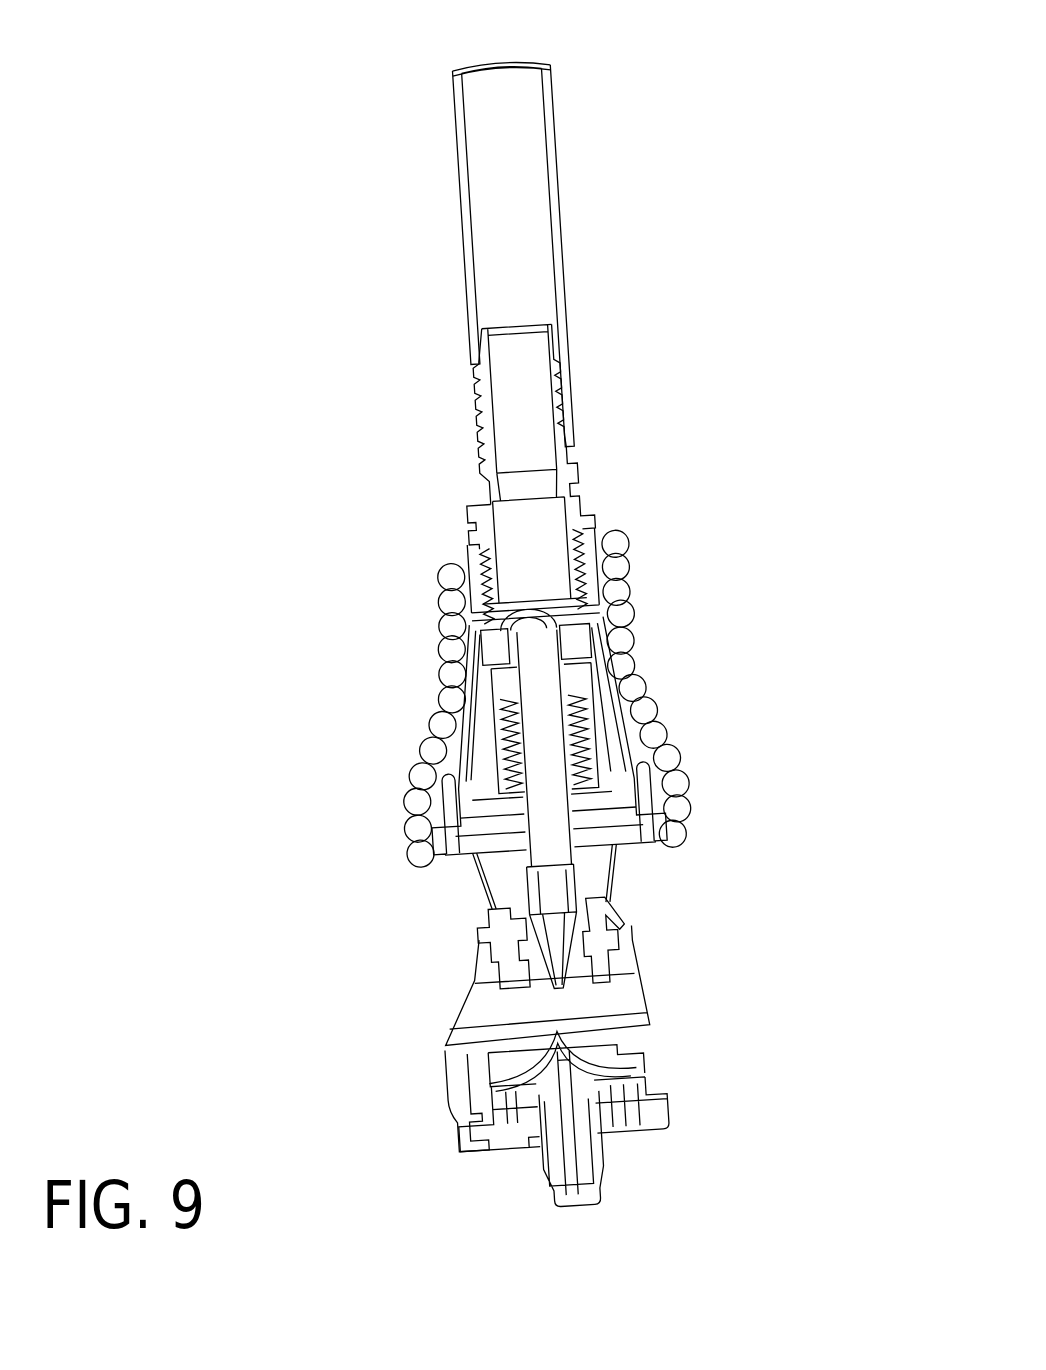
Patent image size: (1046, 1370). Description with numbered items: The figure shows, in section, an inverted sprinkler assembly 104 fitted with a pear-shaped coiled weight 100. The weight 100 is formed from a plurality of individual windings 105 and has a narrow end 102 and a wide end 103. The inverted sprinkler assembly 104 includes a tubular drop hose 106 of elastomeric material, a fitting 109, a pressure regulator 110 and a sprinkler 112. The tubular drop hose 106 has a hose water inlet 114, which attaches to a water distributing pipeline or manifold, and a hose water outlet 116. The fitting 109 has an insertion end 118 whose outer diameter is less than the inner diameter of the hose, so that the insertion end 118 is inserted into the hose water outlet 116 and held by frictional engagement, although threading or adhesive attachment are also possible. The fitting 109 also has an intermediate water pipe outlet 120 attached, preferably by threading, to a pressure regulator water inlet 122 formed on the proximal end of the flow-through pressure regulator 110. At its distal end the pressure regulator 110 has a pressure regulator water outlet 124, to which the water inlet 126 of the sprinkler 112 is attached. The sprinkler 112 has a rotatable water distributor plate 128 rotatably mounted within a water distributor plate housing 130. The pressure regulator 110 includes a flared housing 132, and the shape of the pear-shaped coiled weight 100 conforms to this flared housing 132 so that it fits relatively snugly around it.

The pear-shaped coiled weight 100 is at (647, 719).
The narrow end 102 is at (603, 622).
The wide end 103 is at (672, 792).
The inverted sprinkler assembly 104 is at (774, 62).
The individual windings 105 is at (450, 622).
The tubular drop hose 106 is at (487, 172).
The fitting 109 is at (590, 502).
The pressure regulator 110 is at (670, 900).
The sprinkler 112 is at (678, 1017).
The hose water inlet 114 is at (497, 58).
The hose water outlet 116 is at (570, 450).
The insertion end 118 is at (490, 435).
The intermediate water pipe outlet 120 is at (592, 528).
The pressure regulator water inlet 122 is at (590, 603).
The pressure regulator water outlet 124 is at (520, 955).
The water inlet 126 is at (575, 968).
The rotatable water distributor plate 128 is at (633, 1073).
The water distributor plate housing 130 is at (455, 1100).
The flared housing 132 is at (460, 762).